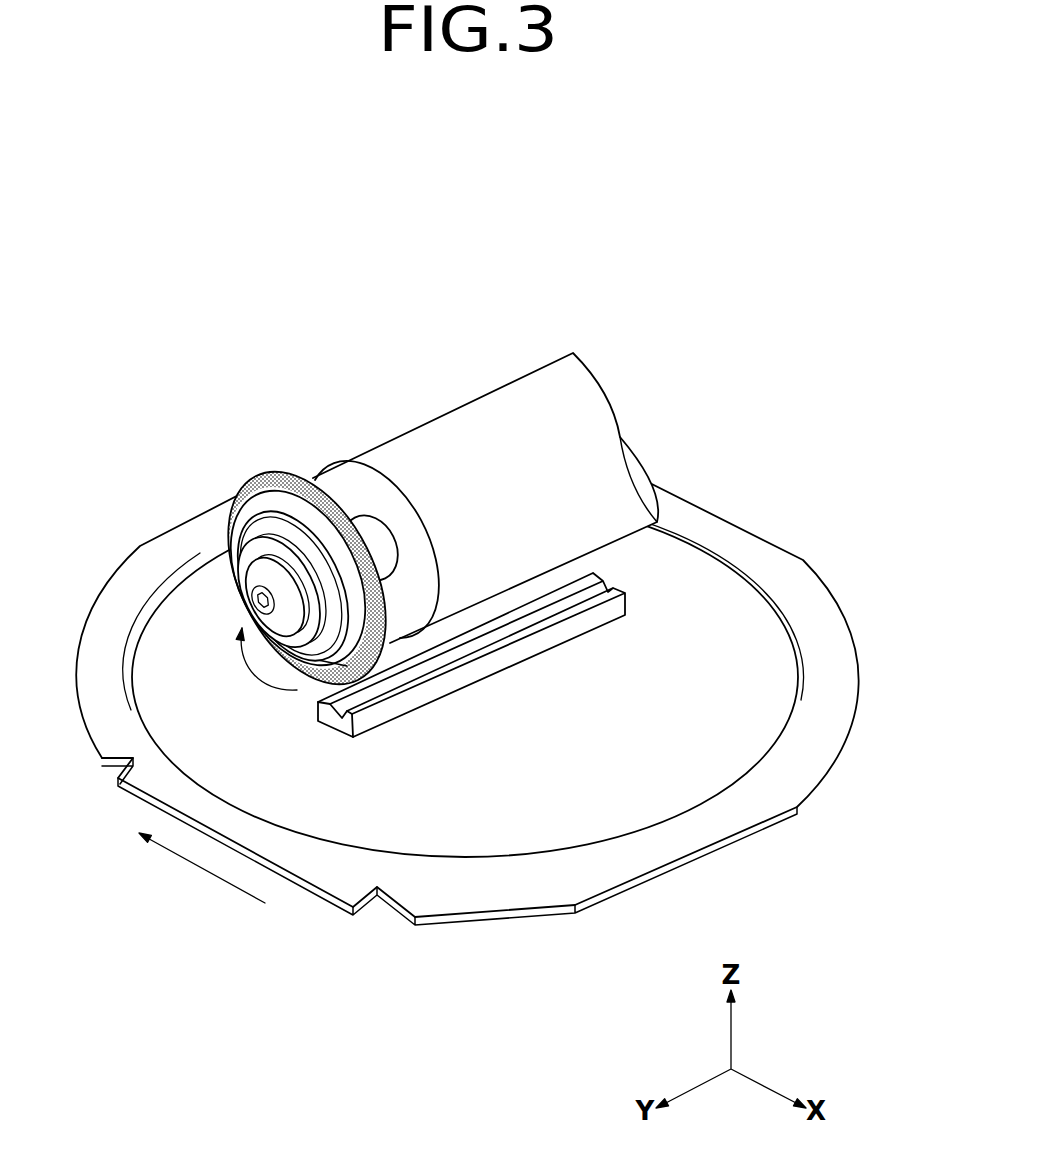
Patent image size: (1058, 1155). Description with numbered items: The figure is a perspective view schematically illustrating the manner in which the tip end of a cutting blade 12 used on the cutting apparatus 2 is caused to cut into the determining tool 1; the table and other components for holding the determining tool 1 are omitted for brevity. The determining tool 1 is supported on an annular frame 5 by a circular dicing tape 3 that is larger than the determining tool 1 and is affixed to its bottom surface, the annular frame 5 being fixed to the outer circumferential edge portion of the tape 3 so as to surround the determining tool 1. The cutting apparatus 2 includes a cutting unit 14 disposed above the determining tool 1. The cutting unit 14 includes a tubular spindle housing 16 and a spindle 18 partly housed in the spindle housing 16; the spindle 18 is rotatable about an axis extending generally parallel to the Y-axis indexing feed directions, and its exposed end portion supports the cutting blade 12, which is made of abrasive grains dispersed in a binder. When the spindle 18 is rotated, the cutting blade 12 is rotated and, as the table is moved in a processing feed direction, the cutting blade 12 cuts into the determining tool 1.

The determining tool 1 is at (491, 677).
The cutting apparatus 2 is at (423, 422).
The tape 3 is at (180, 638).
The annular frame 5 is at (811, 598).
The cutting blade 12 is at (263, 512).
The cutting unit 14 is at (523, 467).
The spindle housing 16 is at (527, 388).
The spindle 18 is at (391, 546).